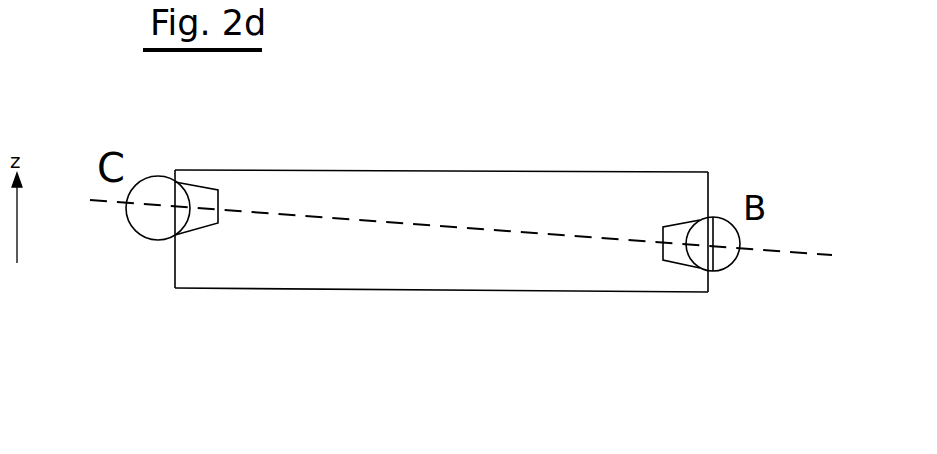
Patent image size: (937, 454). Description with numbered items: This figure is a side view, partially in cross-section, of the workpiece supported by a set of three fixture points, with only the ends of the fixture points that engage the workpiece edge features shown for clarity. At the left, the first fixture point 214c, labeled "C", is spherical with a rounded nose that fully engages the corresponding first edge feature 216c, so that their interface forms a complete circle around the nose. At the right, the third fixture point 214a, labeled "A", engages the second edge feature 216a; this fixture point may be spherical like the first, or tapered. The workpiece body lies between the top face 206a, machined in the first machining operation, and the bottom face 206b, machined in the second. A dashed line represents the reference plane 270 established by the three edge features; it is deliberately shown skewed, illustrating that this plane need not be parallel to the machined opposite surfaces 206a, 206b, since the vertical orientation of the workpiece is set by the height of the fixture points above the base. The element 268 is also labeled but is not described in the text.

The top face 206a is at (440, 170).
The bottom face 206b is at (377, 289).
The reference plane 270 is at (305, 214).
The first fixture point 214c is at (131, 233).
The first edge feature 216c is at (208, 225).
The third fixture point 214a is at (731, 268).
The second edge feature 216a is at (665, 223).
The mount element 268 is at (574, 6).